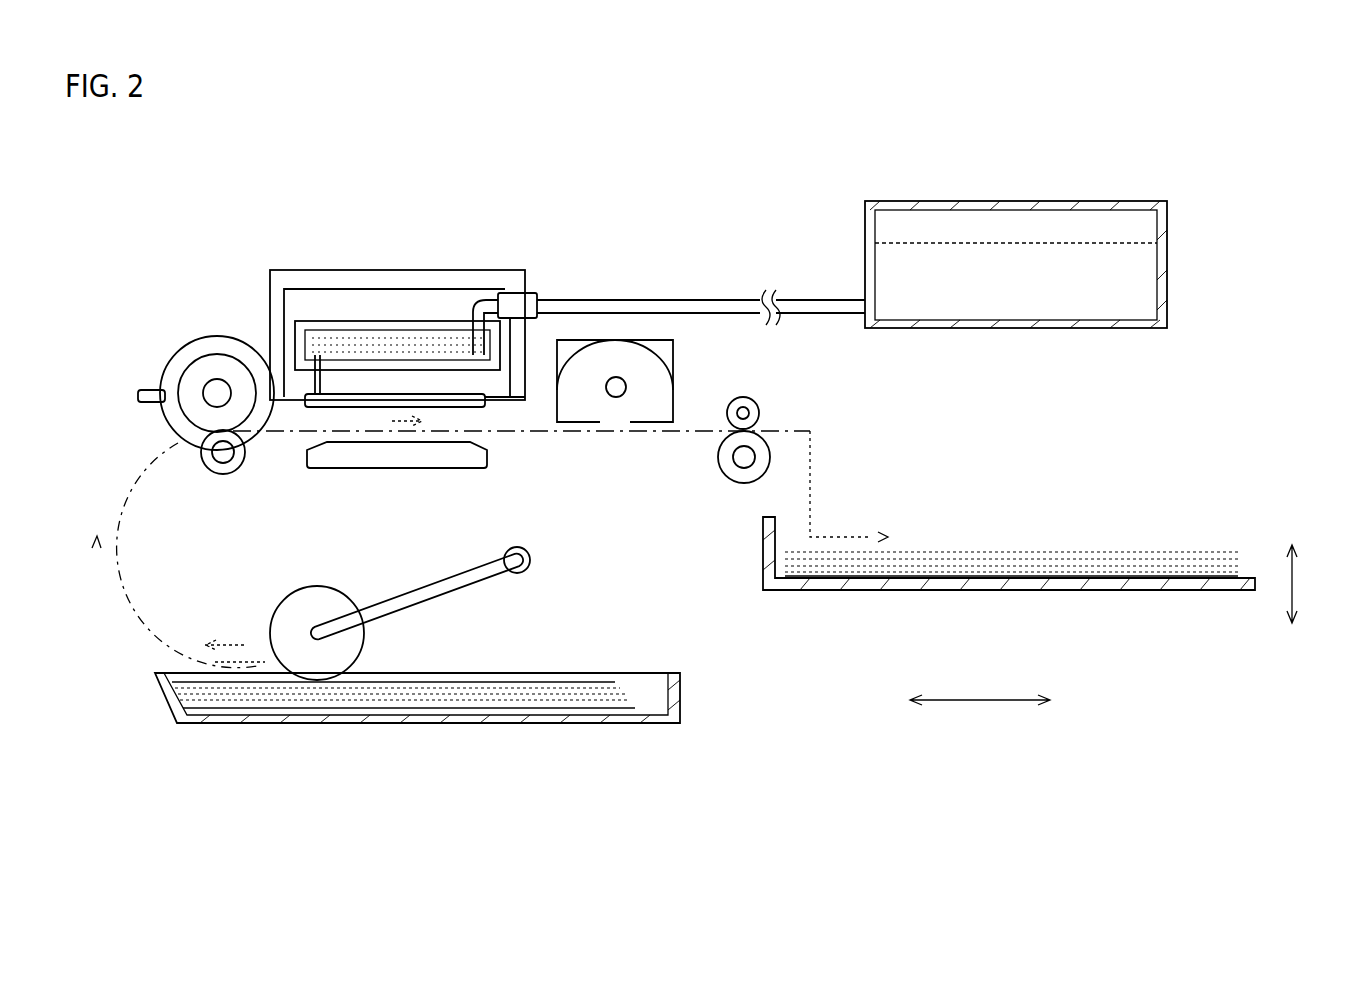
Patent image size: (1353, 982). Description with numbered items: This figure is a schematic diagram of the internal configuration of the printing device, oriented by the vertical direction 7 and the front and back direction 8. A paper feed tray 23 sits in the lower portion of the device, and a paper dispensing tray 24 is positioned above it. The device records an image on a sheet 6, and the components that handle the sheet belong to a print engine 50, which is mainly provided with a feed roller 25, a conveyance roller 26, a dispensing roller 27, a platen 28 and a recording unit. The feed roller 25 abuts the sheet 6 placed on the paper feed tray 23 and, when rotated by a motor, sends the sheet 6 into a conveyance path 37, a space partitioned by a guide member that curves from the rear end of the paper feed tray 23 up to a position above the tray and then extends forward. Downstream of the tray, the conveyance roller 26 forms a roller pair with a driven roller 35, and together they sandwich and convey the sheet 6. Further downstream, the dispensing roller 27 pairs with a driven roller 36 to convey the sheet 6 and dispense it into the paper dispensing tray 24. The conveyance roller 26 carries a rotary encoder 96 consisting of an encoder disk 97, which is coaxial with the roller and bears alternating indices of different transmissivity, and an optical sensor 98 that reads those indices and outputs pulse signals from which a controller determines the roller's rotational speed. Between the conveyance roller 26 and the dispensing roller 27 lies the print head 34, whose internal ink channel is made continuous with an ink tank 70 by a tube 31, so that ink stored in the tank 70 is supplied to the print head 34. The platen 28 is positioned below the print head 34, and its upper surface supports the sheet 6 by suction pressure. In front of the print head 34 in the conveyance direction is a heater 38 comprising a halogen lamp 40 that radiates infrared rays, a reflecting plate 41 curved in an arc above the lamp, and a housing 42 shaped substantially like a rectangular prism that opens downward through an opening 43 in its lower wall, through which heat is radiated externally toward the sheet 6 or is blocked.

The sheet 6 is at (522, 680).
The vertical direction 7 is at (1300, 583).
The front and back direction 8 is at (980, 697).
The paper feed tray 23 is at (621, 672).
The paper dispensing tray 24 is at (937, 592).
The feed roller 25 is at (317, 586).
The conveyance roller 26 is at (213, 355).
The dispensing roller 27 is at (744, 484).
The platen 28 is at (397, 470).
The tube 31 is at (548, 298).
The print head 34 is at (327, 240).
The driven roller 35 is at (224, 476).
The driven roller 36 is at (757, 402).
The conveyance path 37 is at (150, 462).
The heater 38 is at (645, 315).
The halogen lamp 40 is at (614, 377).
The reflecting plate 41 is at (568, 362).
The housing 42 is at (678, 378).
The opening 43 is at (613, 441).
The print engine 50 is at (184, 256).
The tank 70 is at (1170, 285).
The rotary encoder 96 is at (116, 346).
The encoder disk 97 is at (176, 352).
The optical sensor 98 is at (137, 395).